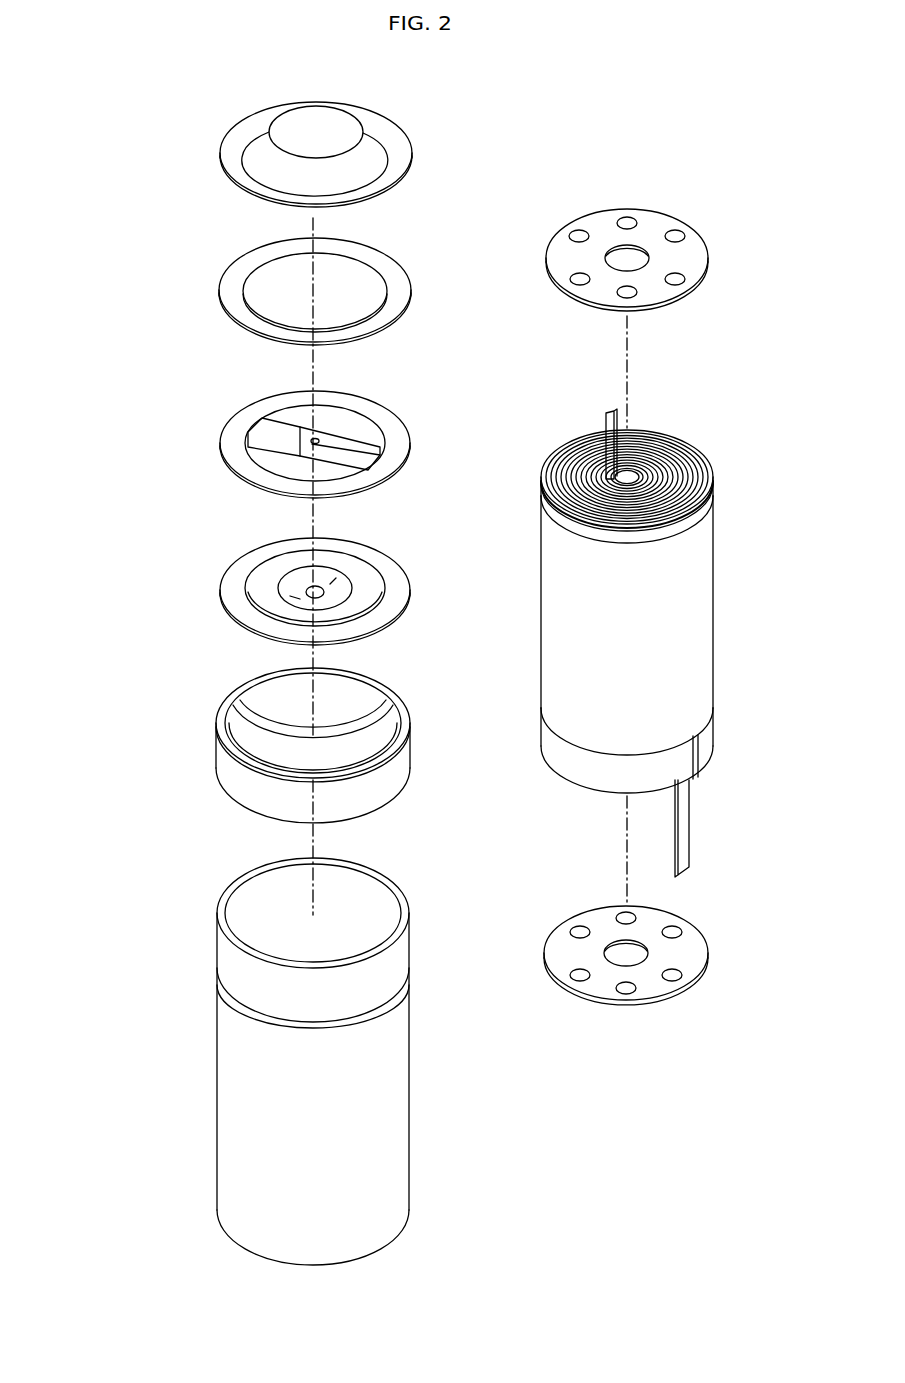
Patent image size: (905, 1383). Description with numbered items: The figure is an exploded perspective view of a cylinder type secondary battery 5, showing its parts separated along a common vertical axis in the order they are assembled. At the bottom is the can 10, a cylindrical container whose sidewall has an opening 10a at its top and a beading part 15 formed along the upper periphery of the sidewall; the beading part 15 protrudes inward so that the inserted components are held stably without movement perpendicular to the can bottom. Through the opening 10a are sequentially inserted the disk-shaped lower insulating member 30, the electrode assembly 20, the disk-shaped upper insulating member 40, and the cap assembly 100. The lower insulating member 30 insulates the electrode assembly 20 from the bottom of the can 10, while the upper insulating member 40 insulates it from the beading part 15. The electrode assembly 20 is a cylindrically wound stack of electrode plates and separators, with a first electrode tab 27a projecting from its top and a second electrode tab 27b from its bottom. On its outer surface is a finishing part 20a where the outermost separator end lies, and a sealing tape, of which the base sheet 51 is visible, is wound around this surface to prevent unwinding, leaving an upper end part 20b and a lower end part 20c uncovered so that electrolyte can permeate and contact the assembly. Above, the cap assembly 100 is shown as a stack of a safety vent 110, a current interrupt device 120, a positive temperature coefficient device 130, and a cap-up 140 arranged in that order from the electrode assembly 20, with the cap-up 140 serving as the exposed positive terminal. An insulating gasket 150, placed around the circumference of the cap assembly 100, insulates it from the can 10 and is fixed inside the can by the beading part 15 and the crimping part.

The secondary battery 5 is at (644, 130).
The can 10 is at (233, 1082).
The opening 10a is at (243, 902).
The beading part 15 is at (219, 988).
The electrode assembly 20 is at (698, 481).
The finishing part 20a is at (683, 503).
The upper end part 20b is at (548, 506).
The lower end part 20c is at (552, 740).
The first electrode tab 27a is at (613, 412).
The second electrode tab 27b is at (690, 828).
The lower insulating member 30 is at (712, 958).
The upper insulating member 40 is at (715, 256).
The base sheet 51 is at (709, 622).
The cap assembly 100 is at (106, 143).
The safety vent 110 is at (232, 590).
The current interrupt device 120 is at (232, 443).
The positive temperature coefficient device 130 is at (232, 290).
The cap-up 140 is at (232, 153).
The insulating gasket 150 is at (232, 759).